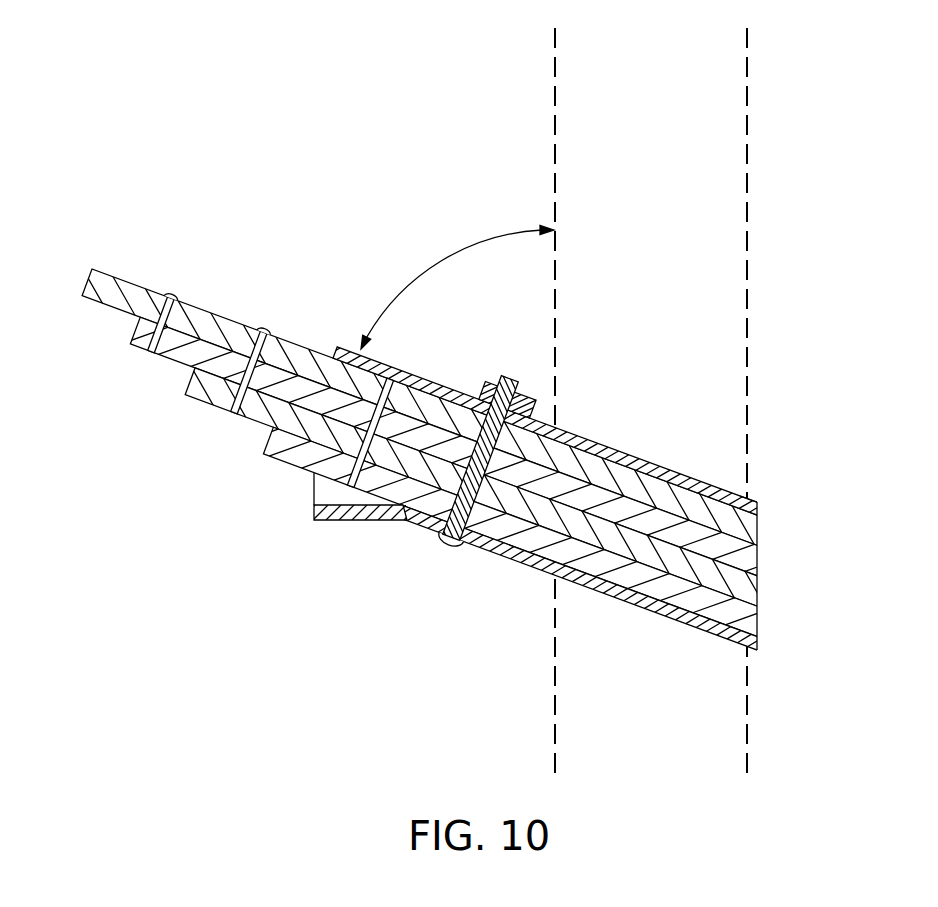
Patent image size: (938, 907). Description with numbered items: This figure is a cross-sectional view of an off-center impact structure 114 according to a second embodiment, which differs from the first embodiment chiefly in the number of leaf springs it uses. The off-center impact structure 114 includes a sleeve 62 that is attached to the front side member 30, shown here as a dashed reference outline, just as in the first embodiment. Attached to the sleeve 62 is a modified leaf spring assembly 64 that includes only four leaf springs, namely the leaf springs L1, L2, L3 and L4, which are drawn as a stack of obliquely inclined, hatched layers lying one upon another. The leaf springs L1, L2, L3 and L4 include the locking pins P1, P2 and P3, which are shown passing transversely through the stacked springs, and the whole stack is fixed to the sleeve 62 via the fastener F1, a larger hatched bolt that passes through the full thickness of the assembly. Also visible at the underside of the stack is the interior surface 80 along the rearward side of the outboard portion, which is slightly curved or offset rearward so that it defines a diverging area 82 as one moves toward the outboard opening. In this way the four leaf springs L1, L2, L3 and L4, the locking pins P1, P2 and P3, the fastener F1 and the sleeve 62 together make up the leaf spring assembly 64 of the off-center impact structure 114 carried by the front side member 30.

The front side member 30 is at (748, 188).
The sleeve 62 is at (648, 461).
The leaf spring assembly 64 is at (771, 571).
The interior surface 80 is at (343, 504).
The diverging area 82 is at (325, 490).
The off-center impact structure 114 is at (766, 486).
The leaf spring L1 is at (101, 300).
The leaf spring L2 is at (143, 346).
The leaf spring L3 is at (208, 400).
The leaf spring L4 is at (285, 457).
The locking pin P1 is at (175, 292).
The locking pin P2 is at (265, 327).
The locking pin P3 is at (384, 427).
The fastener F1 is at (503, 498).